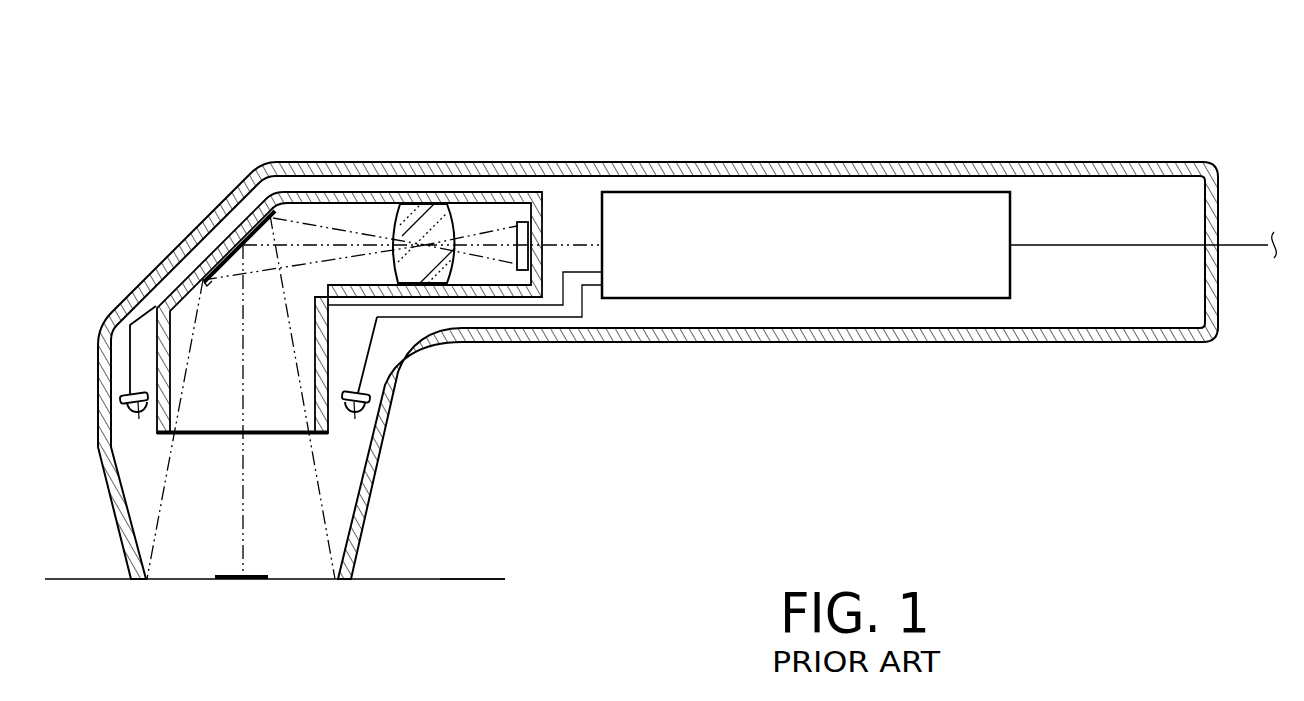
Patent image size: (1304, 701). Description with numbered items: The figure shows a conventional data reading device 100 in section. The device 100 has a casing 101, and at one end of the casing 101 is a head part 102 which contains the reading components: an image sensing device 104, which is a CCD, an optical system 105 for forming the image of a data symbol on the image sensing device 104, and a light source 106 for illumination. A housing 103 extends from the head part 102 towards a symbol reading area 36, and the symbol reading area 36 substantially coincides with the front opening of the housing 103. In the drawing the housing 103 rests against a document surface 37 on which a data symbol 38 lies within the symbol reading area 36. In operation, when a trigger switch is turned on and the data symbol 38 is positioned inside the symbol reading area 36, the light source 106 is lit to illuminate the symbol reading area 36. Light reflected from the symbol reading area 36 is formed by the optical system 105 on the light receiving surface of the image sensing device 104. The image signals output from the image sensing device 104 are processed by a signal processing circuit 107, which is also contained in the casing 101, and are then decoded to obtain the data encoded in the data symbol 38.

The data reading device 100 is at (880, 86).
The casing 101 is at (975, 160).
The head part 102 is at (196, 222).
The housing 103 is at (362, 533).
The image sensing device 104 is at (524, 218).
The optical system 105 is at (428, 198).
The light source 106 is at (127, 412).
The signal processing circuit 107 is at (767, 218).
The symbol reading area 36 is at (182, 580).
The document 37 is at (465, 578).
The data symbol 38 is at (263, 574).